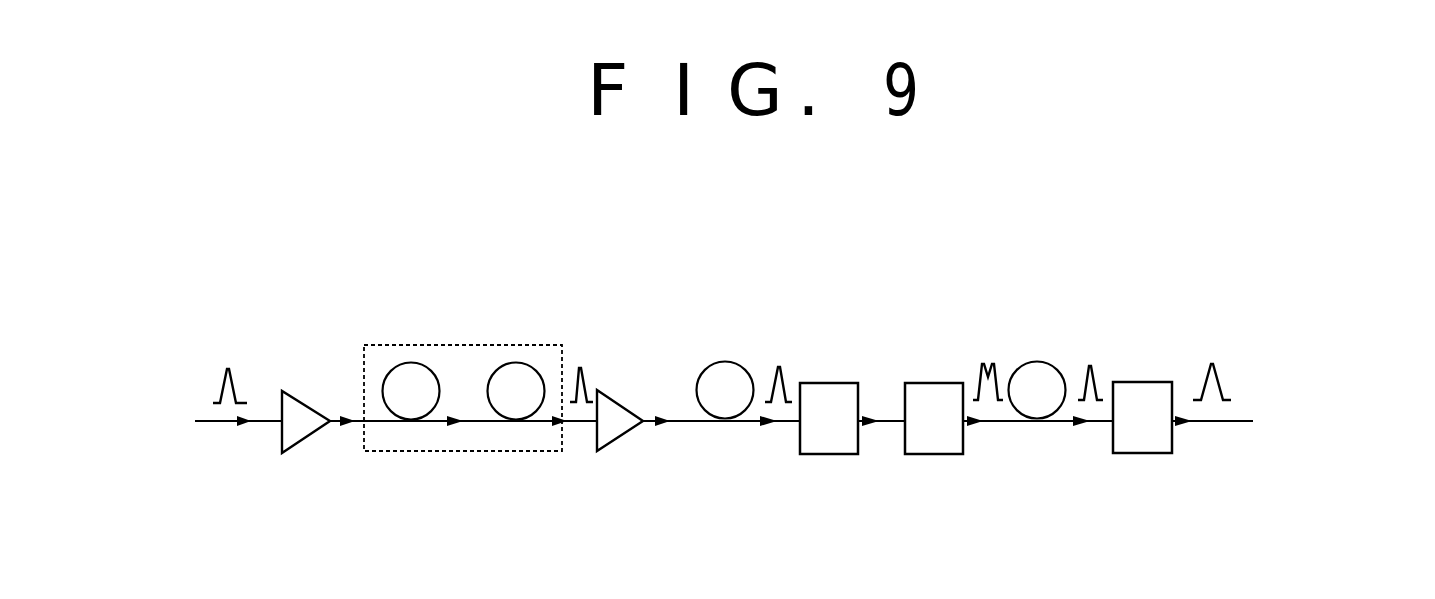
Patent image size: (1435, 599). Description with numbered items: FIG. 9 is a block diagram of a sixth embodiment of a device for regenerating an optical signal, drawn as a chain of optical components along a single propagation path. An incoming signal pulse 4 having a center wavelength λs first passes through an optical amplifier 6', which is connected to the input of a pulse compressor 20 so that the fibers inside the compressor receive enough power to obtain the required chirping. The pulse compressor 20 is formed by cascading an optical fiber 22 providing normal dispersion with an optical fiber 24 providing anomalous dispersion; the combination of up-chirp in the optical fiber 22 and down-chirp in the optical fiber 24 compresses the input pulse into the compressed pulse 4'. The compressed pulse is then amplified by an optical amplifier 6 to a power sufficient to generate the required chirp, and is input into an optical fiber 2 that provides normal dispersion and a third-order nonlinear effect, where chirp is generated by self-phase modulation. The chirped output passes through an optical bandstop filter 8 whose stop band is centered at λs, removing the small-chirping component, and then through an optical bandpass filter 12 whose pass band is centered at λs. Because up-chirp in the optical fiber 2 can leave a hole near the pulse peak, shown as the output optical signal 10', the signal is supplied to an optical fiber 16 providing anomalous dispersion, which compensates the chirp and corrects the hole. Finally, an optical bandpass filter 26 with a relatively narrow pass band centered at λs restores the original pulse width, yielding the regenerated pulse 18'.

The signal pulse 4 is at (232, 360).
The optical amplifier 6' is at (309, 437).
The pulse compressor 20 is at (462, 451).
The optical fiber 22 is at (411, 362).
The optical fiber 24 is at (516, 362).
The compressed pulse 4' is at (600, 370).
The optical amplifier 6 is at (620, 435).
The optical fiber 2 is at (724, 361).
The optical bandstop filter 8 is at (827, 454).
The optical bandpass filter 12 is at (932, 454).
The output optical signal with hole 10' is at (973, 364).
The optical fiber 16 is at (1037, 361).
The optical bandpass filter 26 is at (1140, 453).
The regenerated pulse 18' is at (1235, 363).